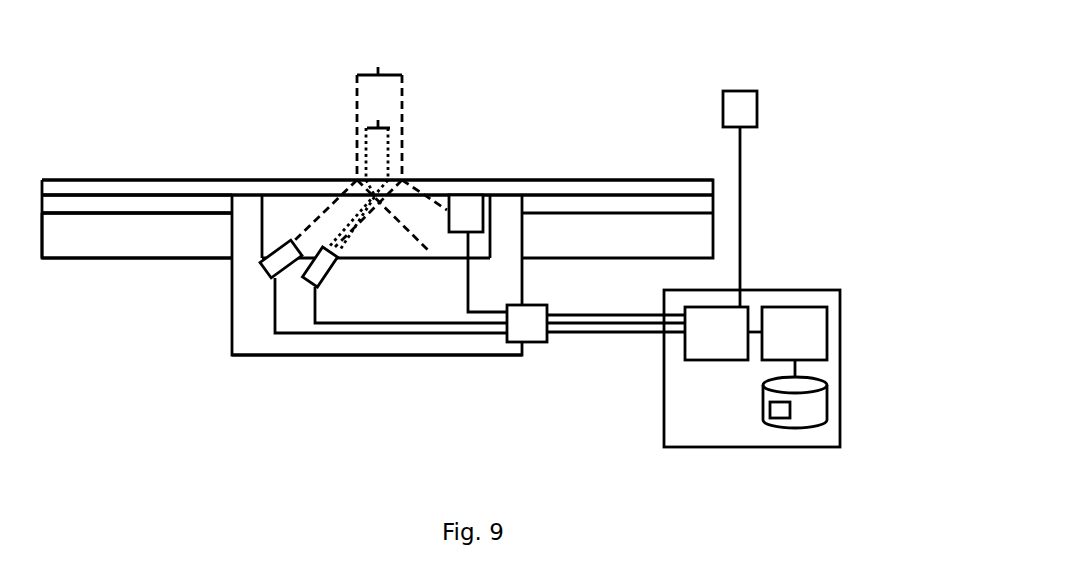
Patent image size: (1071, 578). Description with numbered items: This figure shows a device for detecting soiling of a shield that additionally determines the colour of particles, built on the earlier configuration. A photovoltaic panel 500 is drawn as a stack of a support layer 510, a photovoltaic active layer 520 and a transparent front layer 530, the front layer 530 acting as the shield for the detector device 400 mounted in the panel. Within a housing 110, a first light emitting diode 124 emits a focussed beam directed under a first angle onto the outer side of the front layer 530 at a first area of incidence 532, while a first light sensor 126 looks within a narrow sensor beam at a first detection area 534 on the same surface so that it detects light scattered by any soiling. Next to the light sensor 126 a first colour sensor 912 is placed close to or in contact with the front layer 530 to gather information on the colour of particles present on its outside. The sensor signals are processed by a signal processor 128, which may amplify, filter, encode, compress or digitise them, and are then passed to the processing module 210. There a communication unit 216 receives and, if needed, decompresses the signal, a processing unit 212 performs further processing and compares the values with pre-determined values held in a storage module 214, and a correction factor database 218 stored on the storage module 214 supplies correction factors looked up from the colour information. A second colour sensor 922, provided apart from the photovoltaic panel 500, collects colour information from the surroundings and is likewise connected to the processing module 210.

The photovoltaic panel 500 is at (88, 324).
The support layer 510 is at (80, 233).
The photovoltaic active layer 520 is at (128, 205).
The transparent front layer 530 is at (207, 185).
The first area of incidence 532 is at (378, 67).
The first detection area 534 is at (377, 120).
The housing 110 is at (233, 300).
The first light emitting diode 124 is at (263, 280).
The first light sensor 126 is at (320, 280).
The first colour sensor 912 is at (462, 232).
The signal processor 128 is at (528, 342).
The detector device 400 is at (375, 372).
The second colour sensor 922 is at (757, 115).
The processing module 210 is at (773, 447).
The communication unit 216 is at (716, 308).
The processing unit 212 is at (830, 328).
The storage module 214 is at (828, 405).
The correction factor database 218 is at (767, 417).